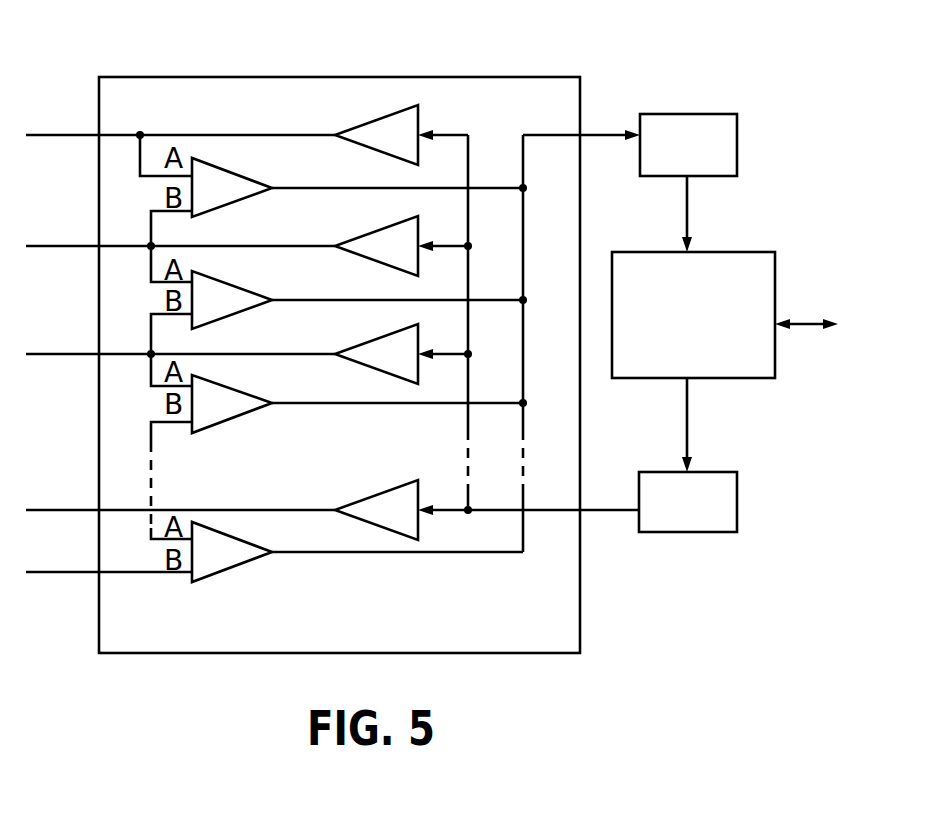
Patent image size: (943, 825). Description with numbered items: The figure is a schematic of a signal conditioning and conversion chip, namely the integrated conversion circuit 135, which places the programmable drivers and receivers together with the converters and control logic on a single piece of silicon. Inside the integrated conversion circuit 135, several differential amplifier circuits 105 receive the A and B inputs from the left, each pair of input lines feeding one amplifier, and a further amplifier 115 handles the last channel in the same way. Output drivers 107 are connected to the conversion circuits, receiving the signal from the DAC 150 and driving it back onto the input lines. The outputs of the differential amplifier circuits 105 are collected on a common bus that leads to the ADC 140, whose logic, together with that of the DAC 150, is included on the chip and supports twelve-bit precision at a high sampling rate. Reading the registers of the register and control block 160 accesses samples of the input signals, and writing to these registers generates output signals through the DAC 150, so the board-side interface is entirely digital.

The integrated conversion circuit 135 is at (155, 77).
The output driver 107 is at (372, 118).
The differential amplifier circuit 105 is at (214, 165).
The differential amplifier / comparator (last channel) 115 is at (216, 574).
The ADC 140 is at (675, 118).
The register and control block 160 is at (735, 378).
The DAC 150 is at (710, 532).